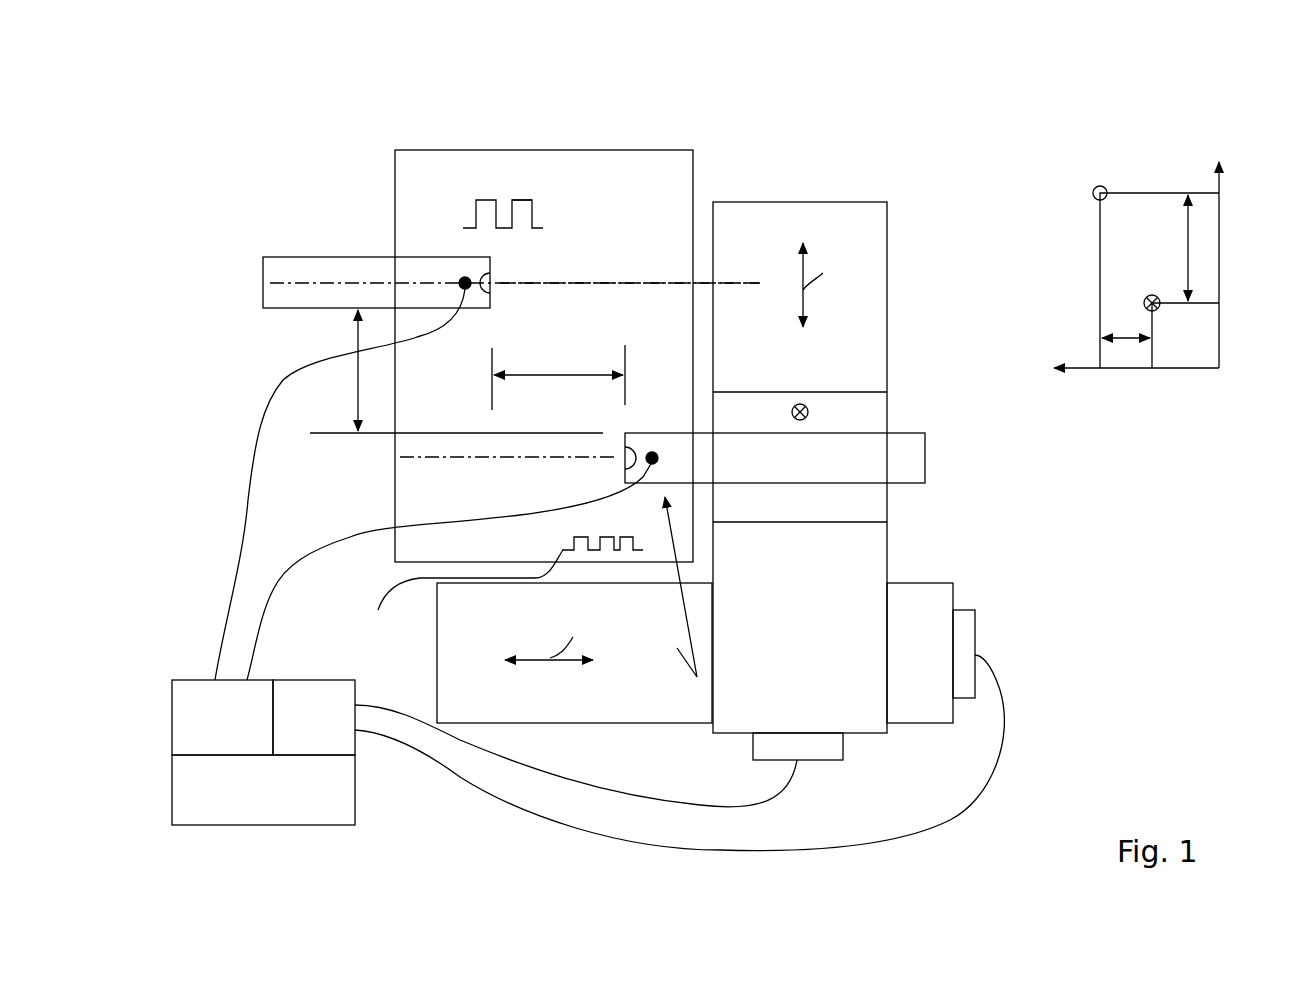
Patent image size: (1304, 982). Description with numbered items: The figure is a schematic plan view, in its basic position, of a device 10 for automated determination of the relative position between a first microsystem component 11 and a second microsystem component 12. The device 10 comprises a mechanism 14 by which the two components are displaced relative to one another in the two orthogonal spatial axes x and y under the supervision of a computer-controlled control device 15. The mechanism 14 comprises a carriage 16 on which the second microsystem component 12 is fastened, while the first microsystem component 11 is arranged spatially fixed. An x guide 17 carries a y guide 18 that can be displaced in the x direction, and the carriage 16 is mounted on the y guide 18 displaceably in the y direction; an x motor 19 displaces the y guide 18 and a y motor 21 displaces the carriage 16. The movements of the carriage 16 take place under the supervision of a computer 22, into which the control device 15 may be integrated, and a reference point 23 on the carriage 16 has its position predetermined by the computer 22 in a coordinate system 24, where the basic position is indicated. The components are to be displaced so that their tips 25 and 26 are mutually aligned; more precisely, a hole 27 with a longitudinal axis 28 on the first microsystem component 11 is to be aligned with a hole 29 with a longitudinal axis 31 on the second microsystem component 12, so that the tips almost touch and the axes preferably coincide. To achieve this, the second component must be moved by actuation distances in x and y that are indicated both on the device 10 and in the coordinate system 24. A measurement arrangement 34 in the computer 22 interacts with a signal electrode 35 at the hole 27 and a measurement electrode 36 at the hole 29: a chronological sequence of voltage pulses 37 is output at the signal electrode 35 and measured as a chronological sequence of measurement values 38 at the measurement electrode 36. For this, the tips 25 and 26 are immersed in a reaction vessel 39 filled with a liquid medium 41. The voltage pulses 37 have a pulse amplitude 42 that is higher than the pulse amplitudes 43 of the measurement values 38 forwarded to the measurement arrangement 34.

The device 10 is at (970, 200).
The first microsystem component 11 is at (283, 275).
The second microsystem component 12 is at (888, 457).
The mechanism 14 is at (980, 545).
The control device 15 is at (638, 753).
The carriage 16 is at (858, 505).
The x guide 17 is at (642, 693).
The y guide 18 is at (845, 705).
The x motor 19 is at (967, 632).
The y motor 21 is at (800, 743).
The computer 22 is at (263, 790).
The reference point 23 is at (808, 400).
The coordinate system 24 is at (1164, 237).
The tip 25 is at (450, 243).
The tip 26 is at (678, 650).
The hole 27 is at (490, 283).
The longitudinal axis 28 is at (570, 283).
The hole 29 is at (628, 462).
The longitudinal axis 31 is at (463, 460).
The measurement arrangement 34 is at (222, 717).
The signal electrode 35 is at (450, 273).
The measurement electrode 36 is at (665, 447).
The voltage pulses 37 is at (497, 217).
The measurement values 38 is at (502, 589).
The reaction vessel 39 is at (693, 190).
The liquid medium 41 is at (544, 356).
The pulse amplitude 42 is at (505, 200).
The pulse amplitudes 43 is at (600, 535).